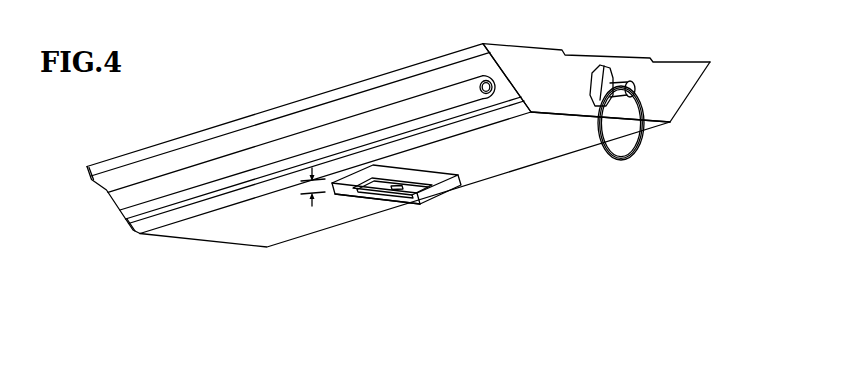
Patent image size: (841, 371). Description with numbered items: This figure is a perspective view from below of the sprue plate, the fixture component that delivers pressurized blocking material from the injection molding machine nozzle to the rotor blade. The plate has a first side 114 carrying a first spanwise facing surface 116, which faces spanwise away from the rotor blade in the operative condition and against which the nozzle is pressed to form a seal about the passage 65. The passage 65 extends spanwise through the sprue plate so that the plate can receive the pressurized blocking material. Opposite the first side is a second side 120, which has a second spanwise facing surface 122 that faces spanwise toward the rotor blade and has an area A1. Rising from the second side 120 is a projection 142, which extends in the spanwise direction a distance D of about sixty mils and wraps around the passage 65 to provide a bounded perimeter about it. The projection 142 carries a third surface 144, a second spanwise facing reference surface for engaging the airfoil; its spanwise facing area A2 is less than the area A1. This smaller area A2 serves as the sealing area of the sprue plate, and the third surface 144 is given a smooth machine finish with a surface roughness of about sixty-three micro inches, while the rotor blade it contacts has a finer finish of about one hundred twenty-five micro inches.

The first side 114 is at (519, 42).
The first spanwise facing surface 116 is at (559, 47).
The second side 120 is at (560, 150).
The second spanwise facing surface 122 is at (223, 235).
The projection 142 is at (416, 168).
The third surface 144 is at (442, 185).
The passage 65 is at (396, 189).
The area of second spanwise facing surface A1 is at (497, 160).
The area of third surface A2 is at (437, 193).
The distance D is at (313, 201).